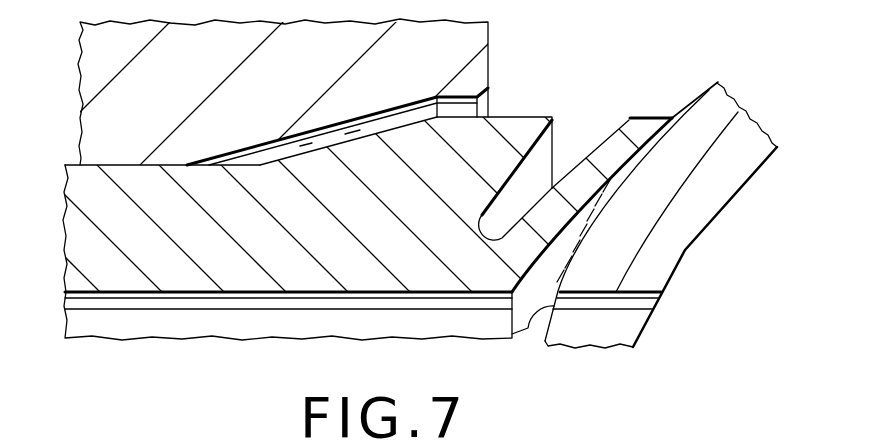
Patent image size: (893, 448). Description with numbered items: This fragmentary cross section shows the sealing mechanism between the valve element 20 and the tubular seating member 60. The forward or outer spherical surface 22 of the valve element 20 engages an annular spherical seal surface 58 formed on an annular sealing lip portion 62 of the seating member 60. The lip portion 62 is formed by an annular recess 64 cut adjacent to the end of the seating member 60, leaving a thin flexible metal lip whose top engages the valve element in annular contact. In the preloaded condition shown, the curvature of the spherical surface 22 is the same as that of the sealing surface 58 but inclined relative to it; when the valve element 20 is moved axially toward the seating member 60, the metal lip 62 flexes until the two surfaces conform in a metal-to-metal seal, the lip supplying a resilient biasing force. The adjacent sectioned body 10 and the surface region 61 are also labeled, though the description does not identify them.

The first body 10 is at (285, 93).
The tubular seating member 60 is at (263, 237).
The valve element 20 is at (719, 150).
The annular spherical seal surface 58 is at (612, 193).
The seal lip 61 is at (603, 214).
The annular sealing lip portion 62 is at (628, 132).
The annular recess 64 is at (553, 153).
The outer spherical surface 22 is at (529, 330).